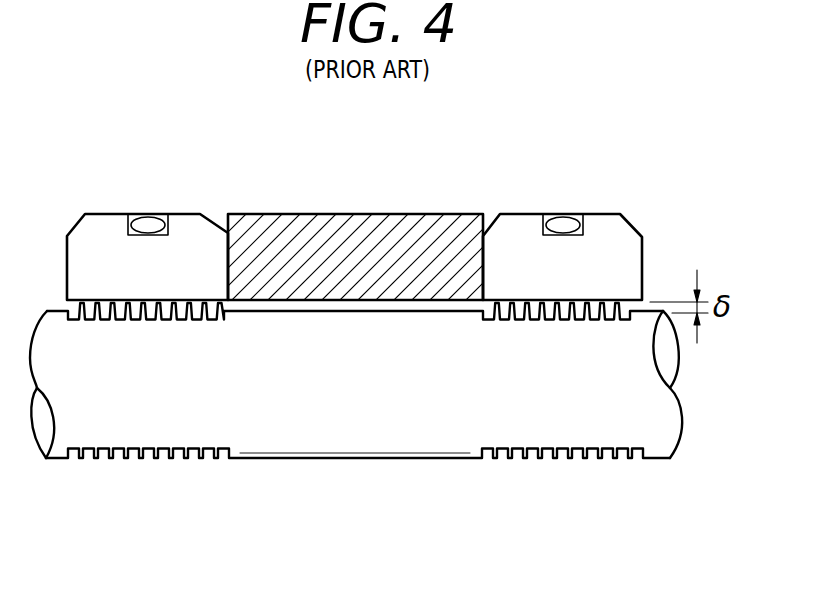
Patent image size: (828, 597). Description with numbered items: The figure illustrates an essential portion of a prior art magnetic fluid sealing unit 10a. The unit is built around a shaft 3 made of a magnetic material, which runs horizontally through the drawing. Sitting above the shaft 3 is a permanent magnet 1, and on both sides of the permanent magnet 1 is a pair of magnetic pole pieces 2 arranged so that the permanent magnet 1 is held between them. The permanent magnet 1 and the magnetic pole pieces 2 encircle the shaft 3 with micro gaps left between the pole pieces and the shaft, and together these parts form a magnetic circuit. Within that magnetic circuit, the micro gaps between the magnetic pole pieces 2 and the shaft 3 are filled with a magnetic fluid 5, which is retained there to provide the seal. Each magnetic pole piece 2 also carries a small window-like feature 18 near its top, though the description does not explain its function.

The permanent magnet 1 is at (299, 213).
The magnetic fluid sealing unit 10a is at (359, 213).
The magnetic pole pieces 2 is at (510, 218).
The ball / rolling element window 18 is at (563, 218).
The magnetic fluid 5 is at (537, 318).
The shaft 3 is at (438, 427).